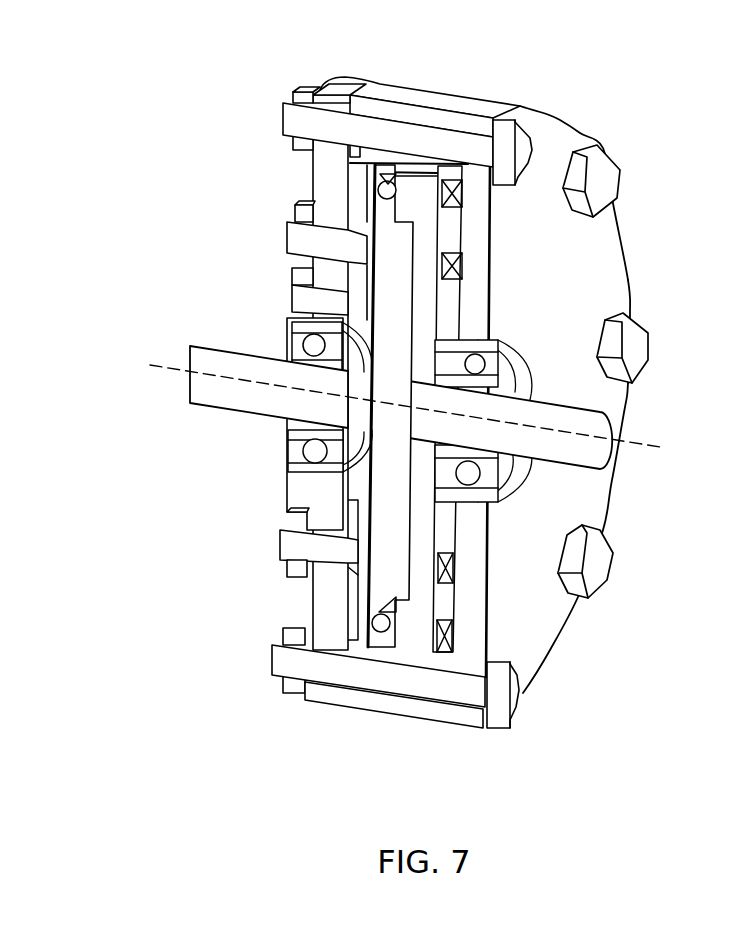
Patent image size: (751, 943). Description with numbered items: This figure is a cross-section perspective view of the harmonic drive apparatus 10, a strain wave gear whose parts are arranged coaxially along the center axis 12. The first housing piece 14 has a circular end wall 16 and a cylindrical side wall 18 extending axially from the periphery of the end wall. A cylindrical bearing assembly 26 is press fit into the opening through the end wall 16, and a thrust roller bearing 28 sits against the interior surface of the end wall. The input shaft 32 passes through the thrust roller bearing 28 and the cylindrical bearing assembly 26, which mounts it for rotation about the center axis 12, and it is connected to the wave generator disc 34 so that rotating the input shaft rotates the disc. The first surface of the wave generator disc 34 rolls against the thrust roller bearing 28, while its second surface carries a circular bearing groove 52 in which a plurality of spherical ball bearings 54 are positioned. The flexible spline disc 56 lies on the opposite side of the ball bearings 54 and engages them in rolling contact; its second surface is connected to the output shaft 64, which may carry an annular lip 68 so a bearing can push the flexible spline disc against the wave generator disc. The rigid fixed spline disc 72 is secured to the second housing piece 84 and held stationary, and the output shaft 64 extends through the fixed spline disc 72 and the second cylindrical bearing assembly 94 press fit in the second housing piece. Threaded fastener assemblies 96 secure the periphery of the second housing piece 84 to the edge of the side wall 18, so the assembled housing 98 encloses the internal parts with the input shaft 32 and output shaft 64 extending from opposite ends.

The harmonic drive apparatus 10 is at (553, 78).
The center axis 12 is at (155, 364).
The first housing piece 14 is at (630, 240).
The circular end wall 16 is at (614, 290).
The cylindrical side wall 18 is at (476, 100).
The cylindrical bearing assembly 26 is at (515, 492).
The thrust roller bearing 28 is at (455, 650).
The input shaft 32 is at (615, 432).
The wave generator disc 34 is at (443, 657).
The circular bearing groove 52 is at (377, 632).
The ball bearings 54 is at (367, 583).
The flexible spline disc 56 is at (300, 650).
The output shaft 64 is at (212, 345).
The annular lip 68 is at (300, 435).
The fixed spline disc 72 is at (358, 168).
The second housing piece 84 is at (331, 80).
The second cylindrical bearing assembly 94 is at (290, 462).
The threaded fastener assemblies 96 is at (624, 154).
The housing 98 is at (420, 78).